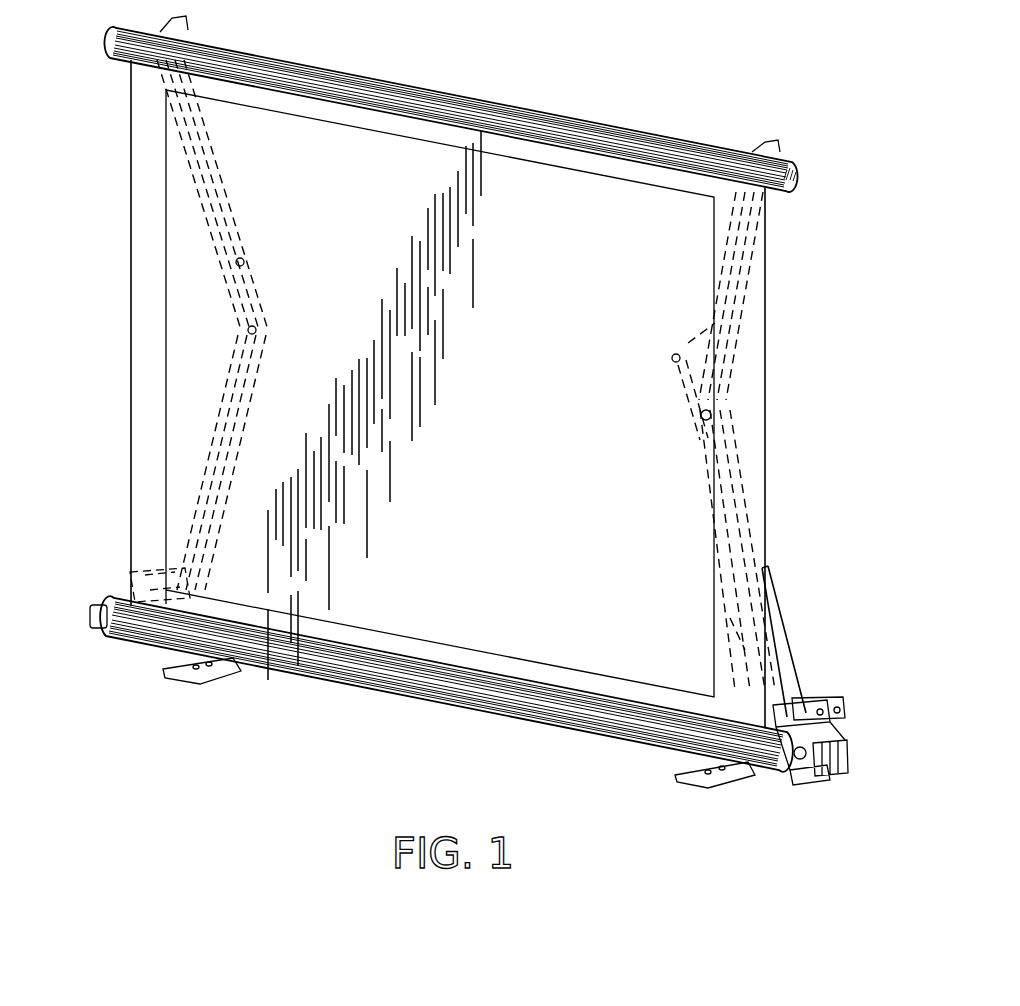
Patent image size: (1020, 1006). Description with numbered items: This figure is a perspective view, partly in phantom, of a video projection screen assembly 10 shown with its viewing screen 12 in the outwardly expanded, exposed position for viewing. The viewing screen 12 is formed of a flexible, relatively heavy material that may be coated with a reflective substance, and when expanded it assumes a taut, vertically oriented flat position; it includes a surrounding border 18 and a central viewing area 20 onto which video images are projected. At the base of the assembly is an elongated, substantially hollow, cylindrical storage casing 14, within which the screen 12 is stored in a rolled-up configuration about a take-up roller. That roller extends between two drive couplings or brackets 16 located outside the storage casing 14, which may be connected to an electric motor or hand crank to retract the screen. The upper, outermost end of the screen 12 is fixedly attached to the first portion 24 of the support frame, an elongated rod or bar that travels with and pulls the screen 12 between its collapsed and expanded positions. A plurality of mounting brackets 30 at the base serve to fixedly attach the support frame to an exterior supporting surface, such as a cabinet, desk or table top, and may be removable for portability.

The video projection screen assembly 10 is at (595, 77).
The viewing screen 12 is at (786, 452).
The storage casing 14 is at (347, 676).
The drive couplings 16 is at (102, 598).
The surrounding border 18 is at (155, 252).
The central viewing area 20 is at (563, 287).
The first portion 24 is at (433, 97).
The mounting brackets 30 is at (178, 686).